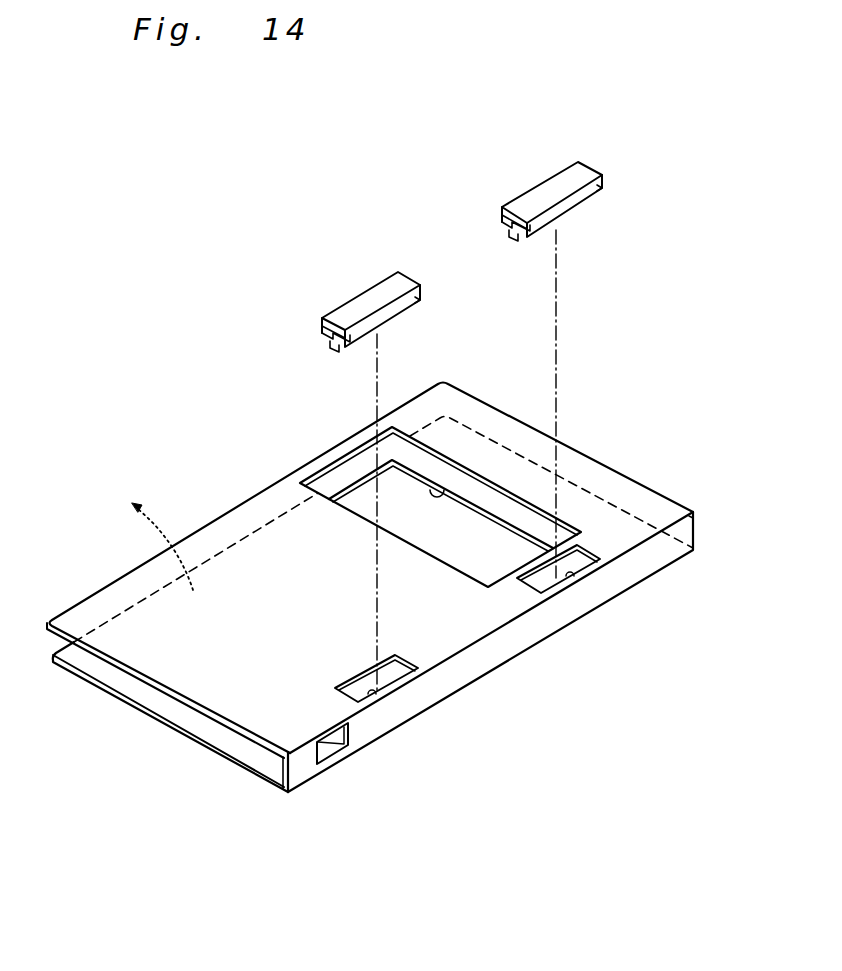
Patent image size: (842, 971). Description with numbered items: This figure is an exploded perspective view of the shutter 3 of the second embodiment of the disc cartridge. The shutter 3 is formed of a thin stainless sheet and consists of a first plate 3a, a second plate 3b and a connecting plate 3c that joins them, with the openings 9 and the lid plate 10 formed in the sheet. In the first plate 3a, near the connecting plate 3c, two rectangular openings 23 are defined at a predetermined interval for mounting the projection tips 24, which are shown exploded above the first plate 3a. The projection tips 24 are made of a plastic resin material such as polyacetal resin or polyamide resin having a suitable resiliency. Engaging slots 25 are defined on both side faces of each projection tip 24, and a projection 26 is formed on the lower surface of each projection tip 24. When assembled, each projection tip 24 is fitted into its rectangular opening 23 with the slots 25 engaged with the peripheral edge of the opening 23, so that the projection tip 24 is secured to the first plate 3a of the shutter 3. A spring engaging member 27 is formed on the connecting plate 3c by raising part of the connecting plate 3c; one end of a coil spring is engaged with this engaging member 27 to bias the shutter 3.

The shutter 3 is at (200, 456).
The first plate 3a is at (142, 658).
The second plate 3b is at (192, 723).
The connecting plate 3c is at (477, 667).
The openings 9 is at (448, 494).
The lid plate 10 is at (233, 571).
The rectangular openings 23 is at (377, 693).
The projection tips 24 is at (369, 302).
The engaging slots 25 is at (323, 337).
The projection 26 is at (331, 347).
The spring engaging member 27 is at (330, 750).